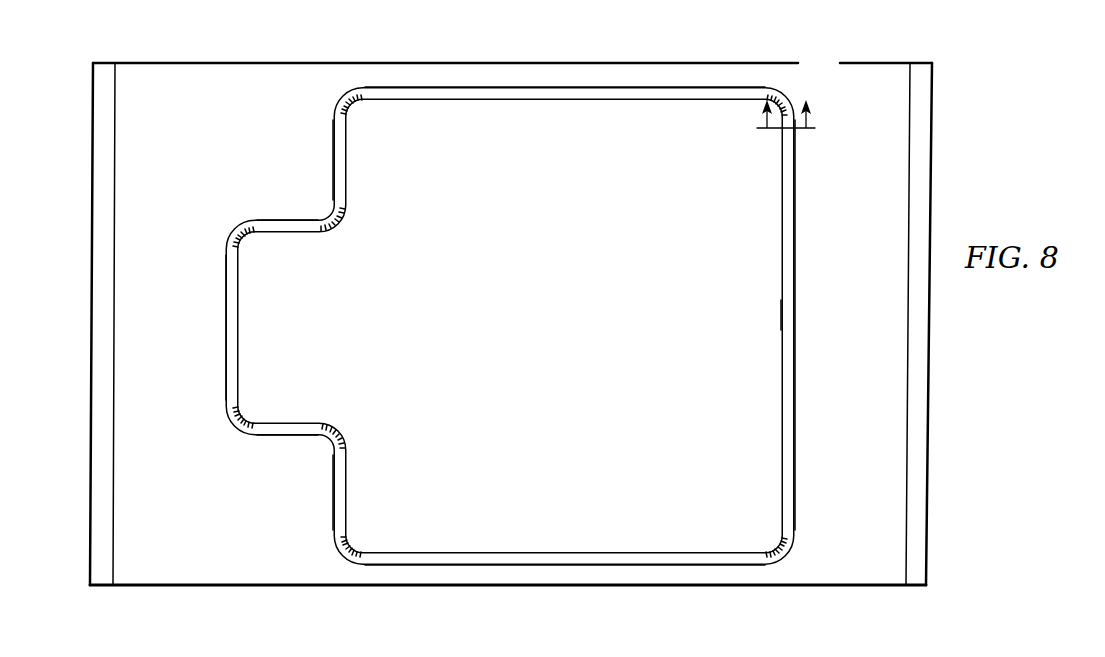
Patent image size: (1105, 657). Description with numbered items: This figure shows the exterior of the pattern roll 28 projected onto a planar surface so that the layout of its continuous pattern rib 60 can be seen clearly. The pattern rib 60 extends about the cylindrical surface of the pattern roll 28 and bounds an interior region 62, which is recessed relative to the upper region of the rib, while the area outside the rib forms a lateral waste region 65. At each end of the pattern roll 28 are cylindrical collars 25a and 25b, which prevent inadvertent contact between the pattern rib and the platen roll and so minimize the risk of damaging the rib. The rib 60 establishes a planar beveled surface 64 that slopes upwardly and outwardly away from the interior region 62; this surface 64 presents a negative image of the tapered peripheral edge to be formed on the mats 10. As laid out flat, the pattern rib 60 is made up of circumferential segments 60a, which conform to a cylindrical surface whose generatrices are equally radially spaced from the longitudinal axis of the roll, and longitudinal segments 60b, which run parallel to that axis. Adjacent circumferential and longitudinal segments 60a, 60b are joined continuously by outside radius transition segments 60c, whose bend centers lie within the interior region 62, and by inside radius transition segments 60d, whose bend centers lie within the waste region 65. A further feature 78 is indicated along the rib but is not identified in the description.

The mat 10 is at (787, 128).
The cylindrical collar 25a is at (93, 533).
The cylindrical collar 25b is at (928, 530).
The pattern roll 28 is at (858, 596).
The pattern rib 60 is at (370, 78).
The circumferential segment 60a is at (352, 166).
The longitudinal segment 60b is at (497, 105).
The outside radius transition segment 60c is at (330, 94).
The inside radius transition segment 60d is at (348, 235).
The interior region 62 is at (504, 336).
The planar beveled surface 64 is at (622, 100).
The waste region 65 is at (843, 362).
The sealing bead 78 is at (780, 313).